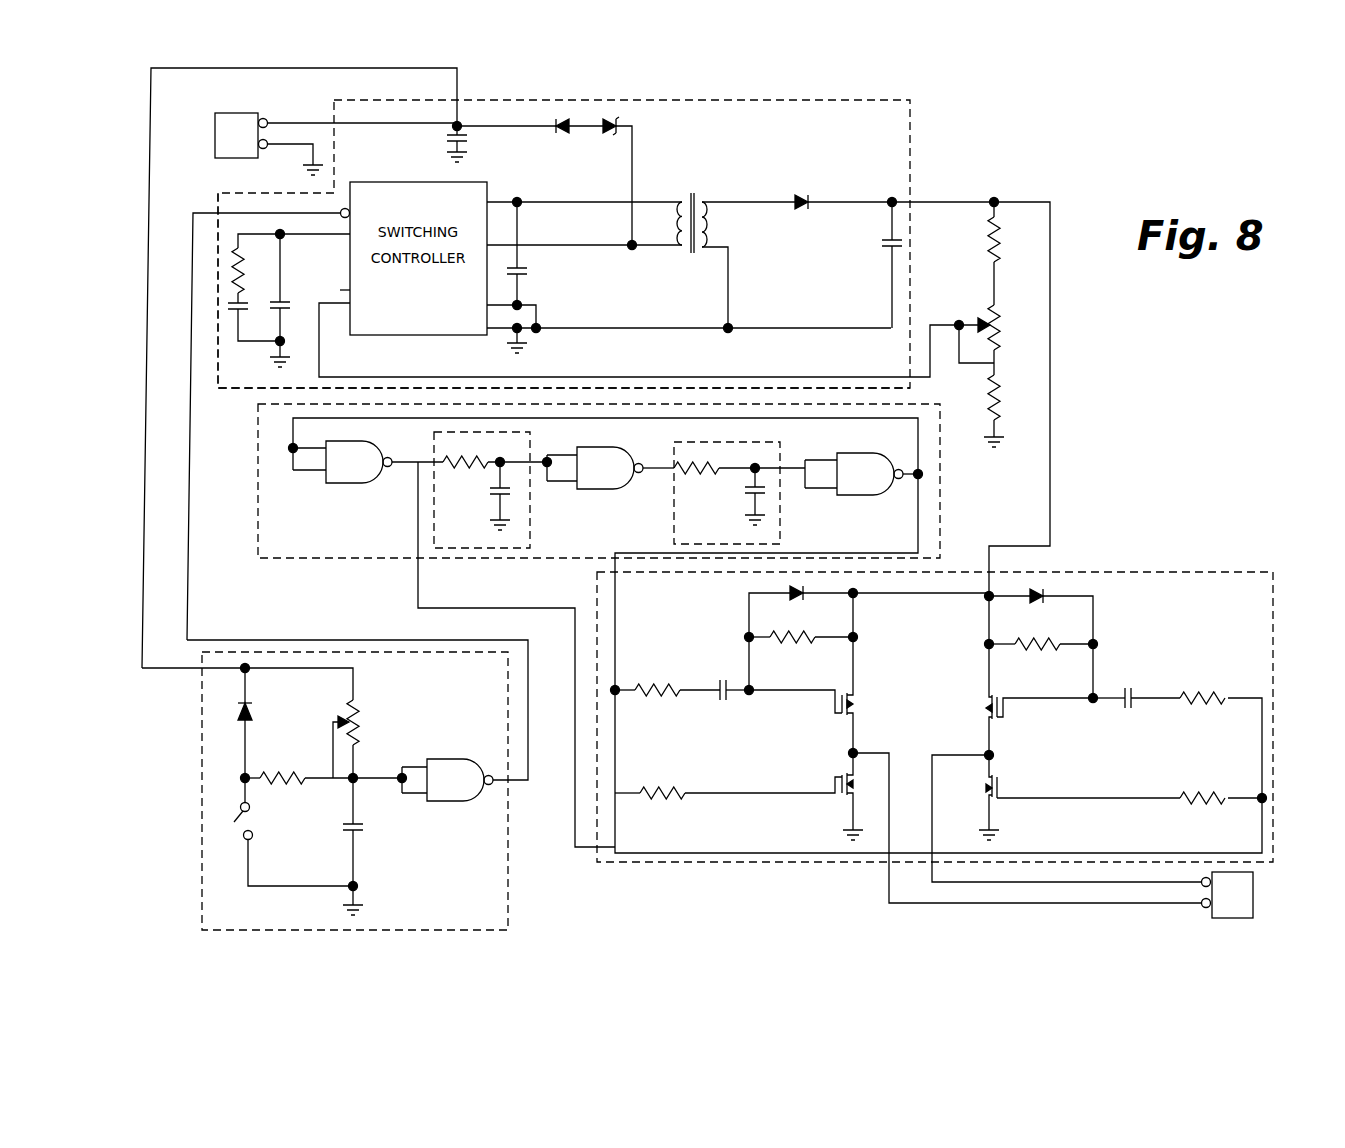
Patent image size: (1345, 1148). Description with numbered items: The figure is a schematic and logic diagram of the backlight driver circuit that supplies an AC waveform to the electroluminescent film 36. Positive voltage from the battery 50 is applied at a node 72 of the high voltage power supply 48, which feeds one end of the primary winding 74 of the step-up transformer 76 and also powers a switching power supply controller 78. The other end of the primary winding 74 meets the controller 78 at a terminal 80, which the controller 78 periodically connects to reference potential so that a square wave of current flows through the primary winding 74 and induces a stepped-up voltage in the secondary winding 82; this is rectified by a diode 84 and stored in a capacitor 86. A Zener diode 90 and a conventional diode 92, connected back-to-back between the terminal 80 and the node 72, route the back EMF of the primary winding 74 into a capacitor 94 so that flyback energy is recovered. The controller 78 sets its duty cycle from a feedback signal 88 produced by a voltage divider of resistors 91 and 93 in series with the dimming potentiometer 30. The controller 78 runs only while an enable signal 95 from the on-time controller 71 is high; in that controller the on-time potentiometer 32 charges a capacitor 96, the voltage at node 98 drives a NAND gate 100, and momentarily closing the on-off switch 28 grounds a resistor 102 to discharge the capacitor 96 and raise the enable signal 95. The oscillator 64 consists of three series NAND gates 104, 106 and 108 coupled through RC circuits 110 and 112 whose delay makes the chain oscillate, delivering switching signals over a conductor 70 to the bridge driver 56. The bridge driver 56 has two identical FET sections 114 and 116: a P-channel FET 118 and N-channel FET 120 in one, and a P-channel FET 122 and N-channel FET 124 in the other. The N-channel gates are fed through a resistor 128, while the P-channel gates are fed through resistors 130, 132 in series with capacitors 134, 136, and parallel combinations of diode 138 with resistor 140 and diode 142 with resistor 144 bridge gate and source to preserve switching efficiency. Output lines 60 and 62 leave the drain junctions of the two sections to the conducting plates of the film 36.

The on-off switch 28 is at (236, 817).
The dimming potentiometer 30 is at (1003, 333).
The on-time potentiometer 32 is at (345, 718).
The electroluminescent film 36 is at (1262, 890).
The high voltage power supply 48 is at (912, 125).
The battery 50 is at (215, 134).
The bridge driver 56 is at (1225, 572).
The output line 60 is at (886, 905).
The output line 62 is at (1015, 890).
The oscillator 64 is at (384, 544).
The conductor 70 is at (577, 650).
The on-time controller 71 is at (490, 922).
The node 72 is at (458, 125).
The primary winding 74 is at (682, 232).
The transformer 76 is at (696, 196).
The switching power supply controller 78 is at (350, 290).
The terminal 80 is at (562, 245).
The secondary winding 82 is at (708, 224).
The diode 84 is at (803, 198).
The capacitor 86 is at (884, 246).
The feedback signal 88 is at (860, 377).
The Zener diode 90 is at (612, 110).
The resistor 91 is at (1003, 248).
The diode 92 is at (560, 135).
The resistor 93 is at (1003, 410).
The capacitor 94 is at (447, 138).
The enable signal 95 is at (210, 213).
The capacitor 96 is at (365, 832).
The node 98 is at (358, 778).
The NAND gate 100 is at (458, 775).
The resistor 102 is at (293, 786).
The NAND gate 104 is at (357, 480).
The NAND gate 106 is at (615, 480).
The NAND gate 108 is at (877, 494).
The RC circuit 110 is at (523, 516).
The RC circuit 112 is at (770, 505).
The FET section 114 is at (908, 655).
The FET section 116 is at (960, 628).
The P-channel FET 118 is at (836, 712).
The N-channel FET 120 is at (838, 782).
The P-channel FET 122 is at (1005, 718).
The N-channel FET 124 is at (1006, 786).
The resistor 128 is at (660, 800).
The resistor 130 is at (655, 700).
The resistor 132 is at (1207, 690).
The capacitor 134 is at (722, 702).
The capacitor 136 is at (1134, 710).
The diode 138 is at (780, 585).
The resistor 140 is at (800, 645).
The diode 142 is at (1040, 592).
The resistor 144 is at (1050, 642).